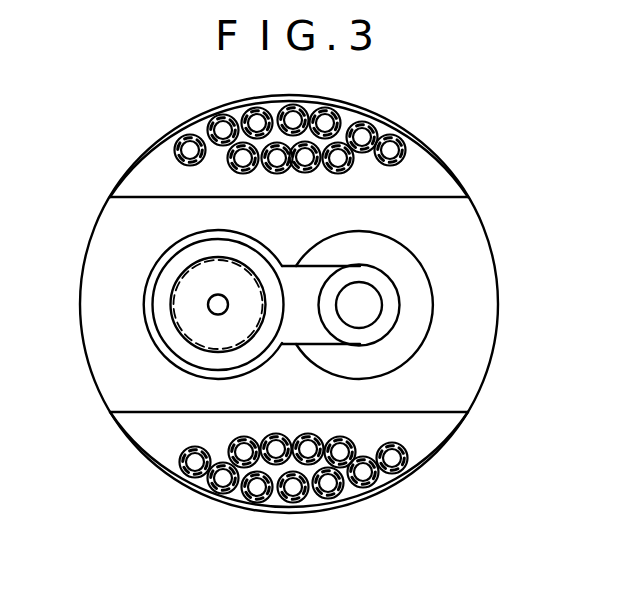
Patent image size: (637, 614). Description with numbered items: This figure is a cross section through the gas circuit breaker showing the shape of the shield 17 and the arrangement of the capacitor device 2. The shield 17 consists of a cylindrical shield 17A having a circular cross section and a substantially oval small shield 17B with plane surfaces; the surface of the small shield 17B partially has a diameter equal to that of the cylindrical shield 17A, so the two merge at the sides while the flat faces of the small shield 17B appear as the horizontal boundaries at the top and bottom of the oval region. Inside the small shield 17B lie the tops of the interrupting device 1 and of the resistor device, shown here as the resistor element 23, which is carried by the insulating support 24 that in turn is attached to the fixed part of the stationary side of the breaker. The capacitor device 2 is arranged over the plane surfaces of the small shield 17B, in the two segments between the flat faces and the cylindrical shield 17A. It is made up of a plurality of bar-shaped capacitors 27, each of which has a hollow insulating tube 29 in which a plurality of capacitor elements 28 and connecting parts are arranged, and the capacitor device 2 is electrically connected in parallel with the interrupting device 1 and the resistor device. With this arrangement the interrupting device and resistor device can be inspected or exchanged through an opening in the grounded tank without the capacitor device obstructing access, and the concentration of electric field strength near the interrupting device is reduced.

The interrupting device 1 is at (170, 317).
The capacitor device 2 is at (177, 145).
The shield 17 is at (507, 272).
The cylindrical shield 17A is at (175, 480).
The small shield 17B is at (172, 413).
The resistor element 23 is at (399, 318).
The insulating support 24 is at (320, 258).
The bar-shaped capacitor 27 is at (410, 157).
The capacitor elements 28 is at (400, 148).
The hollow insulating tube 29 is at (400, 165).